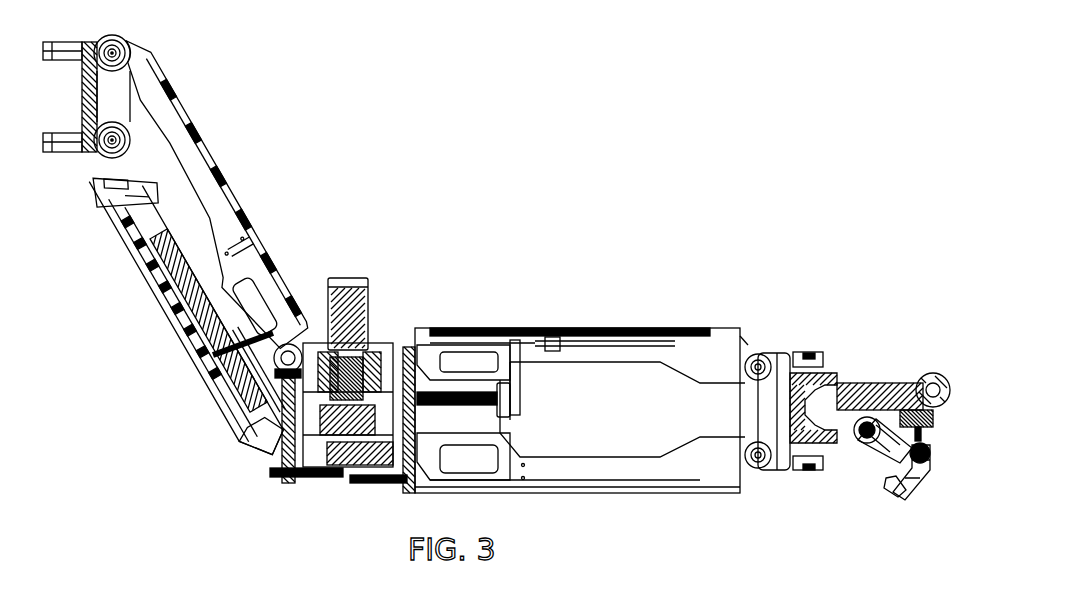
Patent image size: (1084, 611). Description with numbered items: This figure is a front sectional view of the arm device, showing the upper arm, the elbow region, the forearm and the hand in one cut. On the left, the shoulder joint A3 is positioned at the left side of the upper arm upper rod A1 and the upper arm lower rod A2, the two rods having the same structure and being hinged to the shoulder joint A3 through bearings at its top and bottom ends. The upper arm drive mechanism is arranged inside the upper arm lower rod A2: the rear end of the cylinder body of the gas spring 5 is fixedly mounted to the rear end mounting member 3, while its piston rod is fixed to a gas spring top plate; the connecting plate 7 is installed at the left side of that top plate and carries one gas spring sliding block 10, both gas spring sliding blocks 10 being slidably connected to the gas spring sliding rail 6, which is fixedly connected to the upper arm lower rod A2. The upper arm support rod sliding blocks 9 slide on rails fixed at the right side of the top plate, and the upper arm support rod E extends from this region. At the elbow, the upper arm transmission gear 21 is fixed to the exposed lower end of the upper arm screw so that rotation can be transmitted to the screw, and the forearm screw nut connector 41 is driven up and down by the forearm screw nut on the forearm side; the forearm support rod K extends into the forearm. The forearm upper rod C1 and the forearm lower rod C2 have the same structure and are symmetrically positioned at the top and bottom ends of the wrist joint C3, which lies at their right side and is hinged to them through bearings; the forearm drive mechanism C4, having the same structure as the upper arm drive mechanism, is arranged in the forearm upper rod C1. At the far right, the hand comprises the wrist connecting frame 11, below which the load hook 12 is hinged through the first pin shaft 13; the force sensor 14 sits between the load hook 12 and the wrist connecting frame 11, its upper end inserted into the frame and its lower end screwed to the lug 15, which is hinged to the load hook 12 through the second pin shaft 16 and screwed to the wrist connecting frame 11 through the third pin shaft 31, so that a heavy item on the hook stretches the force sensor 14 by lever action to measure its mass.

The upper arm upper rod A1 is at (246, 179).
The upper arm lower rod A2 is at (162, 329).
The shoulder joint A3 is at (152, 96).
The rear end mounting member 3 is at (105, 195).
The gas spring 5 is at (237, 183).
The gas spring sliding rail 6 is at (144, 340).
The connecting plate 7 is at (153, 352).
The upper arm support rod sliding block 9 is at (201, 398).
The gas spring sliding block 10 is at (139, 351).
The upper arm support rod E is at (205, 431).
The upper arm transmission gear 21 is at (300, 428).
The forearm screw nut connector 41 is at (471, 365).
The forearm support rod K is at (467, 333).
The forearm upper rod C1 is at (586, 371).
The forearm lower rod C2 is at (622, 458).
The wrist joint C3 is at (791, 360).
The forearm drive mechanism C4 is at (552, 300).
The wrist connecting frame 11 is at (870, 330).
The load hook 12 is at (866, 487).
The first pin shaft 13 is at (820, 486).
The force sensor 14 is at (898, 345).
The lug 15 is at (928, 499).
The second pin shaft 16 is at (881, 515).
The third pin shaft 31 is at (923, 328).